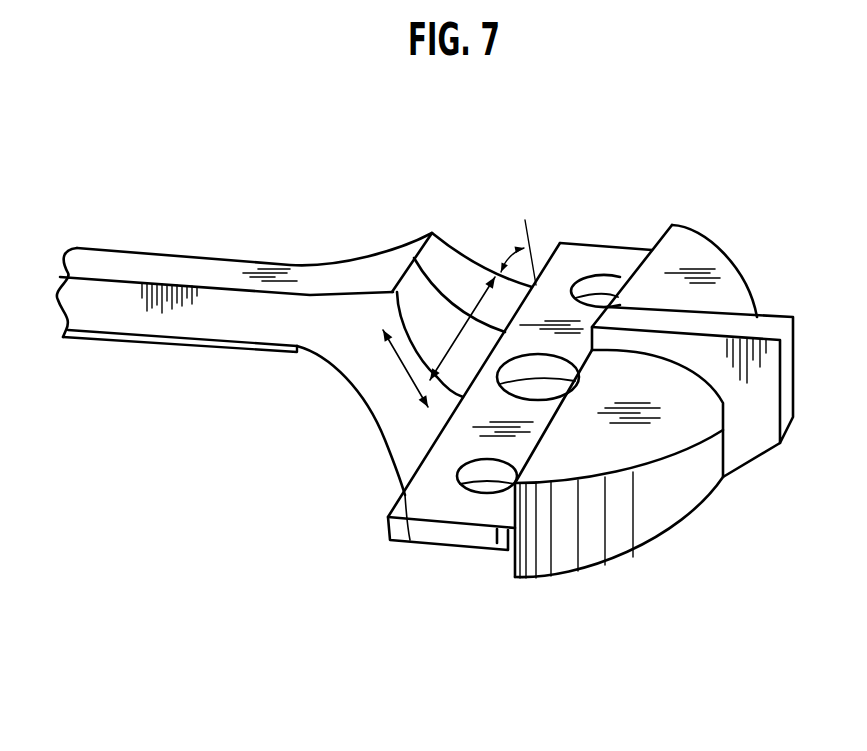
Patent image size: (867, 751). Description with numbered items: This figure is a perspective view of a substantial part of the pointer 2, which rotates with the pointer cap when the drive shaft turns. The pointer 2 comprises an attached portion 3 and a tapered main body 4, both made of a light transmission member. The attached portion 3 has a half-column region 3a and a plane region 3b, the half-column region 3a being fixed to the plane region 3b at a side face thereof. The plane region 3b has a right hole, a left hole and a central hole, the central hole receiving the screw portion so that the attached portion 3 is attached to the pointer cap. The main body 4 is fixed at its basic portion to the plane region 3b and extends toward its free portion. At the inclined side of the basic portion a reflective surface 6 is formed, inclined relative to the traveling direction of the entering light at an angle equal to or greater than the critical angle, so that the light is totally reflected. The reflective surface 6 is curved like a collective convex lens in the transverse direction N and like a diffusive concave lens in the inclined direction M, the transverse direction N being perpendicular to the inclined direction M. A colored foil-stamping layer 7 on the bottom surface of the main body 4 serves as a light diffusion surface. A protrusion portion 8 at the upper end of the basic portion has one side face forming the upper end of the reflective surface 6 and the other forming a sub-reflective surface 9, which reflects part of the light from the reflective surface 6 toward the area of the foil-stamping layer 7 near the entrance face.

The pointer 2 is at (340, 213).
The attached portion 3 is at (590, 527).
The half-column region 3a is at (677, 508).
The plane region 3b is at (477, 533).
The main body 4 is at (287, 321).
The reflective surface 6 is at (455, 282).
The foil-stamping layer 7 is at (184, 344).
The protrusion portion 8 is at (392, 297).
The sub-reflective surface 9 is at (415, 260).
The inclined direction M is at (405, 368).
The transverse direction N is at (410, 540).